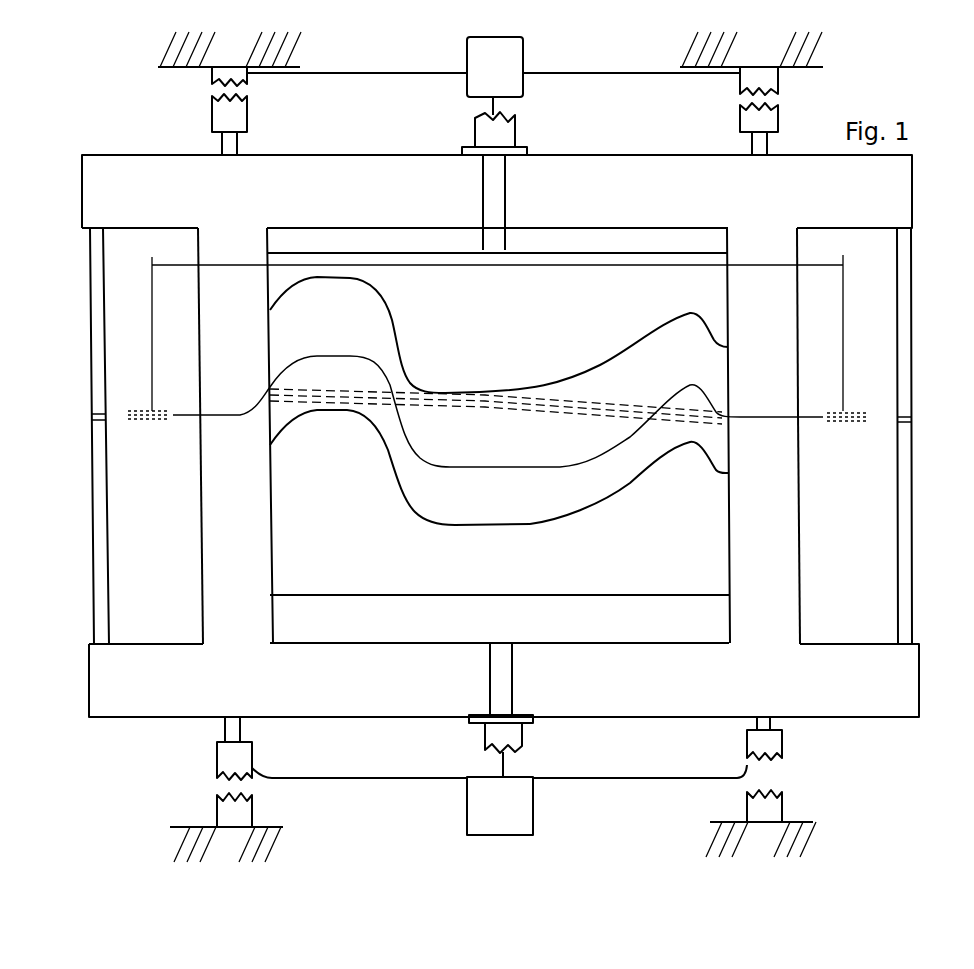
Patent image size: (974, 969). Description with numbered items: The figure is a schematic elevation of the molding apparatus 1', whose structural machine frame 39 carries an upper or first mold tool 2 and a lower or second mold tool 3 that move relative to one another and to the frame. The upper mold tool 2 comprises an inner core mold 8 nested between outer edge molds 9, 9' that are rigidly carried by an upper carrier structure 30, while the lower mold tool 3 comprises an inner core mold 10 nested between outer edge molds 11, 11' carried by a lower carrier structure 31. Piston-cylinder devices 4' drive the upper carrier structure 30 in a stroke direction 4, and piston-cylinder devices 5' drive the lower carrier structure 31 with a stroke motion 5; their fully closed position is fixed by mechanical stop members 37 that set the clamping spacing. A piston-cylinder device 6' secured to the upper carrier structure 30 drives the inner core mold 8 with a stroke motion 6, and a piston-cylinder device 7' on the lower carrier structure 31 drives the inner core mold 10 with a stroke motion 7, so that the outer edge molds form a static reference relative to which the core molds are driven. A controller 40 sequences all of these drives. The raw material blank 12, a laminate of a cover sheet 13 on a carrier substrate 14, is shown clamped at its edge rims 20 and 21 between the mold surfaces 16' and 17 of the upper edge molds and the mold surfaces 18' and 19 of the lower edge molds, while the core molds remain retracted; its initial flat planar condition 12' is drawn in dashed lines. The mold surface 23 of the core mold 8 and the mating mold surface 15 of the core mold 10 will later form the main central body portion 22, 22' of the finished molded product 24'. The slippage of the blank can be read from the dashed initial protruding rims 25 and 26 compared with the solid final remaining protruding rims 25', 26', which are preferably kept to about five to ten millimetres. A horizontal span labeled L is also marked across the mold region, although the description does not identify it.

The molding apparatus 1' is at (538, 420).
The upper or first mold tool 2 is at (800, 310).
The lower or second mold tool 3 is at (800, 547).
The stroke direction 4 is at (772, 305).
The stroke motion 5 is at (744, 661).
The stroke motion 6 is at (514, 252).
The stroke motion 7 is at (575, 621).
The piston-cylinder devices 4' is at (517, 111).
The piston-cylinder devices 5' is at (523, 772).
The piston-cylinder device 6' is at (478, 126).
The piston-cylinder device 7' is at (490, 746).
The inner core mold 8 is at (693, 262).
The outer edge mold 9 is at (686, 352).
The outer edge mold 9' is at (365, 335).
The inner core mold 10 is at (698, 497).
The outer edge mold 11 is at (582, 615).
The outer edge mold 11' is at (389, 467).
The raw material blank 12 is at (860, 388).
The initial flat planar condition 12' is at (496, 371).
The cover layer 13 is at (490, 459).
The carrier layer 14 is at (533, 472).
The mold surface 15 is at (598, 507).
The mold surface 16' is at (190, 382).
The mold surface 17 is at (747, 413).
The mold surface 18' is at (196, 461).
The mold surface 19 is at (773, 426).
The outer edge rim 20 is at (263, 397).
The outer edge rim 21 is at (758, 421).
The main central body portion 22 is at (498, 411).
The main central body portion 22' is at (496, 376).
The mold surface 23 is at (472, 392).
The molded product 24' is at (500, 495).
The initial protruding rim 25 is at (141, 385).
The final remaining protruding rim 25' is at (169, 445).
The initial protruding rim 26 is at (864, 403).
The final remaining protruding rim 26' is at (832, 451).
The upper carrier structure 30 is at (605, 175).
The lower carrier structure 31 is at (642, 707).
The mechanical stop members 37 is at (920, 527).
The structural machine frame 39 is at (240, 60).
The controller 40 is at (506, 81).
The sheet length L is at (633, 265).